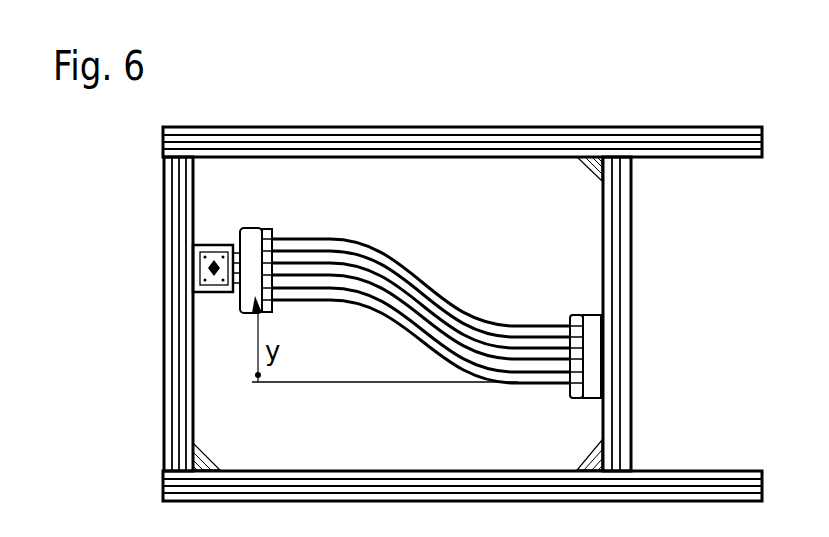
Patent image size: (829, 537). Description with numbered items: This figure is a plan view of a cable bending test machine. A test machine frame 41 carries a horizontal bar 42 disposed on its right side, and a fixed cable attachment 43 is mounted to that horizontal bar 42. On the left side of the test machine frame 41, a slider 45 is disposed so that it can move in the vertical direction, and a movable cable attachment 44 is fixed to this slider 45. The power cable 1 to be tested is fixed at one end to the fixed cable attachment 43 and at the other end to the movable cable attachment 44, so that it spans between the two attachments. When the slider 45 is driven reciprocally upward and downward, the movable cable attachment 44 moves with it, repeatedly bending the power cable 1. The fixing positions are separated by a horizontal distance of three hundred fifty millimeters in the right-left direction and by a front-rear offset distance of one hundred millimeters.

The test machine frame 41 is at (625, 108).
The horizontal bar 42 is at (608, 248).
The fixed cable attachment 43 is at (583, 356).
The movable cable attachment 44 is at (253, 228).
The slider 45 is at (165, 262).
The power cable 1 is at (452, 330).